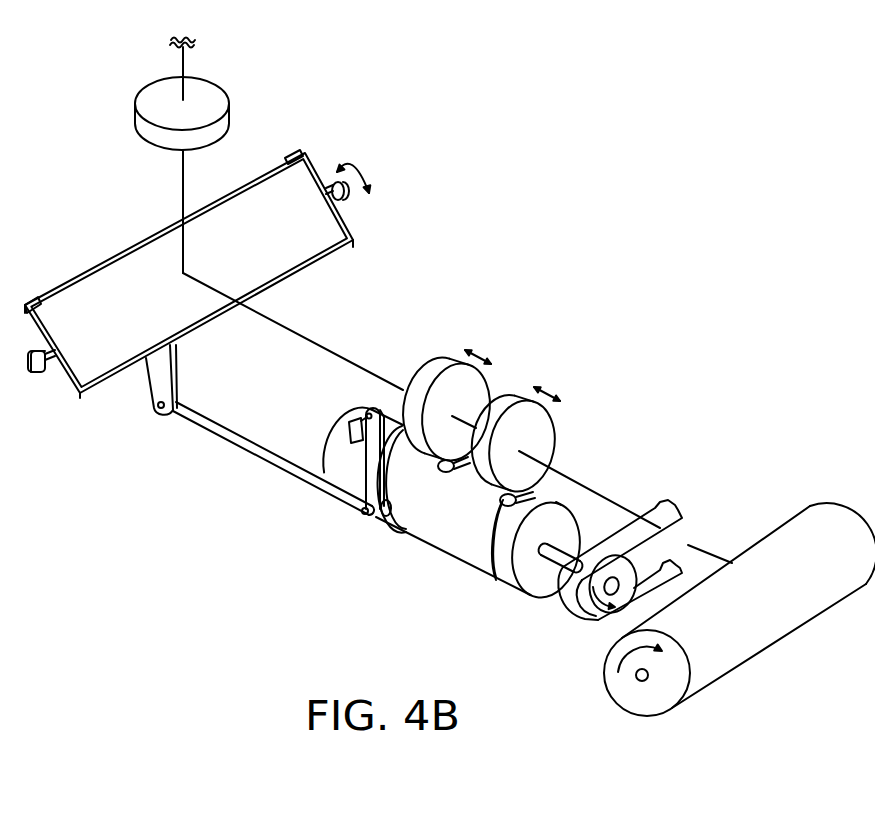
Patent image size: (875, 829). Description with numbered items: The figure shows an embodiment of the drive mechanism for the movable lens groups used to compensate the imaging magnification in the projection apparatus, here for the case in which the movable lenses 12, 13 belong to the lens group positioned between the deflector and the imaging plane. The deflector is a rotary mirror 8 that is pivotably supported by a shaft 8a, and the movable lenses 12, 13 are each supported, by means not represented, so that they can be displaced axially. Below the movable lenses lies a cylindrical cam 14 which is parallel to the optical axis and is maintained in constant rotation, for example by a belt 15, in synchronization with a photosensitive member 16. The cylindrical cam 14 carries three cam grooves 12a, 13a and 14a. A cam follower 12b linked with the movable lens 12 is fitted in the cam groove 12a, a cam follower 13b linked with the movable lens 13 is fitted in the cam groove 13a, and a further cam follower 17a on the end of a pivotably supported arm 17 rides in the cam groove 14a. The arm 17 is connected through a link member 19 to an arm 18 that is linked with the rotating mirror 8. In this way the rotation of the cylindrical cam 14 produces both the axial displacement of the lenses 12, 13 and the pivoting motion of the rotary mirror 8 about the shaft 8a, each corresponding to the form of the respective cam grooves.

The rotary mirror 8 is at (122, 275).
The shaft 8a is at (363, 196).
The movable lens 12 is at (484, 380).
The cam groove 12a is at (407, 535).
The cam follower 12b is at (447, 473).
The movable lens 13 is at (553, 434).
The cam groove 13a is at (487, 572).
The cam follower 13b is at (517, 498).
The cylindrical cam 14 is at (457, 557).
The cam groove 14a is at (392, 433).
The belt 15 is at (655, 509).
The photosensitive member 16 is at (739, 660).
The arm 17 is at (363, 479).
The pad 17a is at (385, 517).
The arm 18 is at (157, 386).
The link member 19 is at (238, 443).